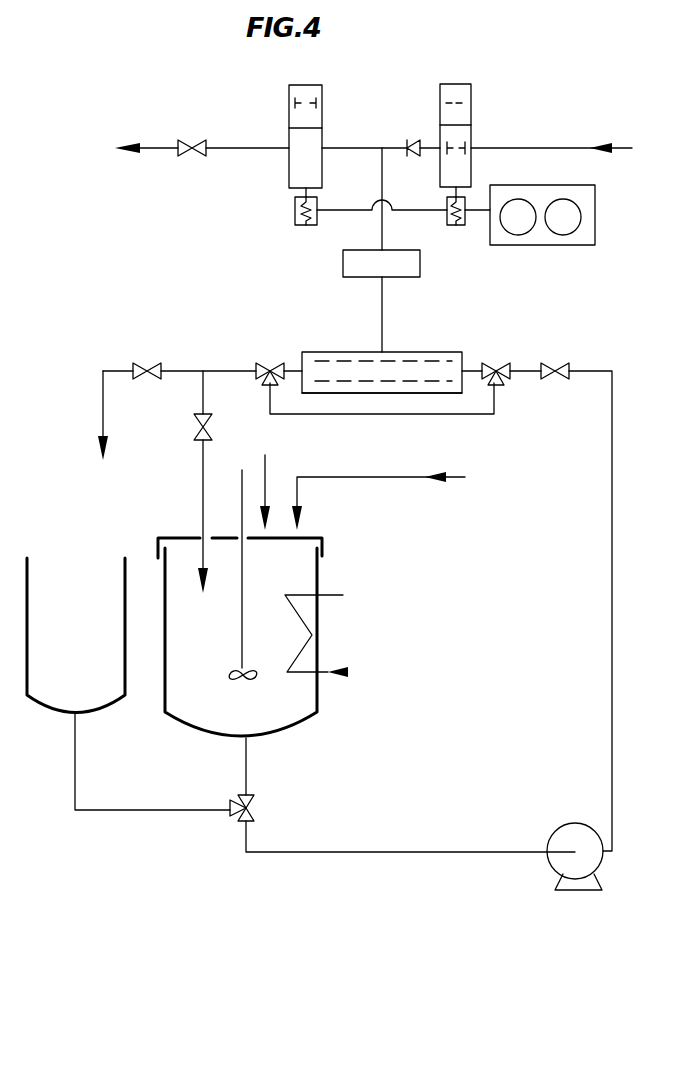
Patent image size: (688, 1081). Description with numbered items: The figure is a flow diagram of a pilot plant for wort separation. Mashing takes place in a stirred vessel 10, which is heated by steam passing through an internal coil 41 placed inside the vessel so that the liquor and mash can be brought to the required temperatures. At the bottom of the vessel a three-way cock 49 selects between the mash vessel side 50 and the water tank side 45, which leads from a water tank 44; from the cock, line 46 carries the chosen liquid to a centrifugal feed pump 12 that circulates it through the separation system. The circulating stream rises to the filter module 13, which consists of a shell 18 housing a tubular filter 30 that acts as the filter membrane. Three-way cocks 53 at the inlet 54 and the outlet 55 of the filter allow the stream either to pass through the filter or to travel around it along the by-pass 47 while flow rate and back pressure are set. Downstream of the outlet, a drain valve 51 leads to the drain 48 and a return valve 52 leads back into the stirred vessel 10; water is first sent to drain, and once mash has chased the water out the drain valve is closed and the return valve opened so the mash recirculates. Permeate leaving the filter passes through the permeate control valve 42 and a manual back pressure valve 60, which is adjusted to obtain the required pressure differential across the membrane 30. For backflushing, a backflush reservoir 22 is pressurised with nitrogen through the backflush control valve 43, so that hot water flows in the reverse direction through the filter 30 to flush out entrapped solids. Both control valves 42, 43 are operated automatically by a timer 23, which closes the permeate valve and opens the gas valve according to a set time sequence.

The stirred vessel 10 is at (295, 728).
The centrifugal pump 12 is at (560, 838).
The filter module 13 is at (418, 352).
The shell 18 is at (437, 393).
The backflush reservoir 22 is at (343, 263).
The timer 23 is at (548, 245).
The tubular filter 30 is at (348, 383).
The internal coil 41 is at (338, 592).
The permeate control valve 42 is at (322, 128).
The backflush control valve 43 is at (471, 114).
The water tank 44 is at (95, 708).
The line 45 is at (181, 811).
The line 46 is at (363, 855).
The by-pass 47 is at (393, 414).
The drain 48 is at (106, 423).
The three-way cock 49 is at (254, 814).
The mash vessel side 50 is at (246, 773).
The drain valve 51 is at (148, 364).
The return valve 52 is at (196, 438).
The three-way cock 53 is at (264, 386).
The inlet 54 is at (484, 366).
The outlet 55 is at (288, 366).
The manual back pressure valve 60 is at (193, 158).